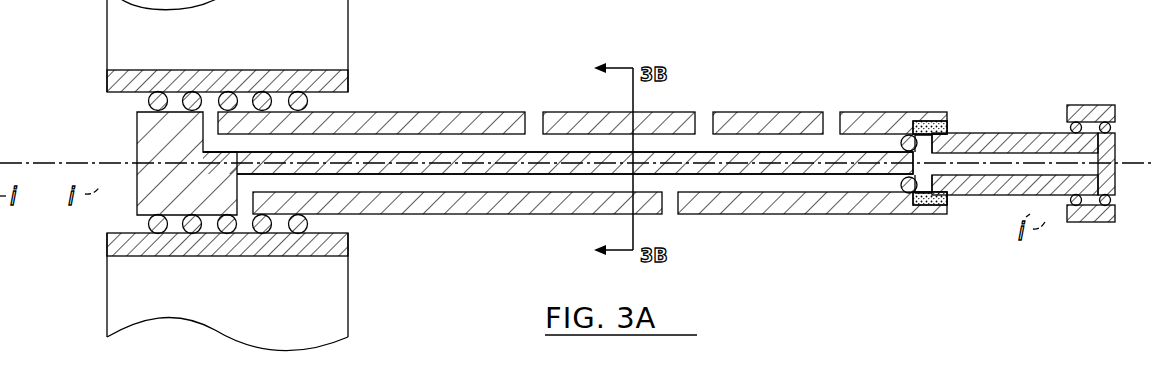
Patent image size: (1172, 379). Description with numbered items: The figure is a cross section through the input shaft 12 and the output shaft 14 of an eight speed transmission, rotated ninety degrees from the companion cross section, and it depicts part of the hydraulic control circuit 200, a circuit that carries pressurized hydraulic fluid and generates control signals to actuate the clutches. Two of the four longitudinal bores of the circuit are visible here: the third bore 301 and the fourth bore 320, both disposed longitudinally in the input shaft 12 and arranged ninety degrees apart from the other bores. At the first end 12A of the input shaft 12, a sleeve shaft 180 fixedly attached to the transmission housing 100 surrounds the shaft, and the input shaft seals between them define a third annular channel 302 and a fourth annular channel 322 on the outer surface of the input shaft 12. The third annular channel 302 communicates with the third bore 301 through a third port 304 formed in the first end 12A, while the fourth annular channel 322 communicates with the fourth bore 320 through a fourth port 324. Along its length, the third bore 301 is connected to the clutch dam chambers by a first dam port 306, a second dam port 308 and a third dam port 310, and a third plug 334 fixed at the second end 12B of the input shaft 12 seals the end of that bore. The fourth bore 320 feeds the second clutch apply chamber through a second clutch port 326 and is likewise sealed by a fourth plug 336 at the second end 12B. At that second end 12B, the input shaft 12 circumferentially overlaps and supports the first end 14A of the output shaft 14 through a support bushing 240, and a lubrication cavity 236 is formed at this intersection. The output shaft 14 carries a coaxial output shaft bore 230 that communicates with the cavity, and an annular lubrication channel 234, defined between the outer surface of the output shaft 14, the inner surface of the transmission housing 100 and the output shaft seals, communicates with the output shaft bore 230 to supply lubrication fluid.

The input shaft 12 is at (557, 211).
The first end of the input shaft 12A is at (108, 220).
The second end of the input shaft 12B is at (814, 228).
The output shaft 14 is at (1118, 193).
The first end of the output shaft 14A is at (986, 210).
The transmission housing 100 is at (107, 36).
The sleeve shaft 180 is at (135, 257).
The hydraulic control circuit 200 is at (434, 302).
The output shaft bore 230 is at (1016, 154).
The annular lubrication channel 234 is at (1093, 105).
The lubrication cavity 236 is at (948, 130).
The support bushing 240 is at (924, 121).
The third bore 301 is at (416, 136).
The third annular channel 302 is at (222, 97).
The third port 304 is at (205, 143).
The first dam port 306 is at (540, 128).
The second dam port 308 is at (712, 112).
The third dam port 310 is at (838, 116).
The fourth bore 320 is at (450, 190).
The fourth annular channel 322 is at (254, 100).
The fourth port 324 is at (246, 200).
The second clutch port 326 is at (662, 196).
The third plug 334 is at (908, 134).
The fourth plug 336 is at (903, 188).